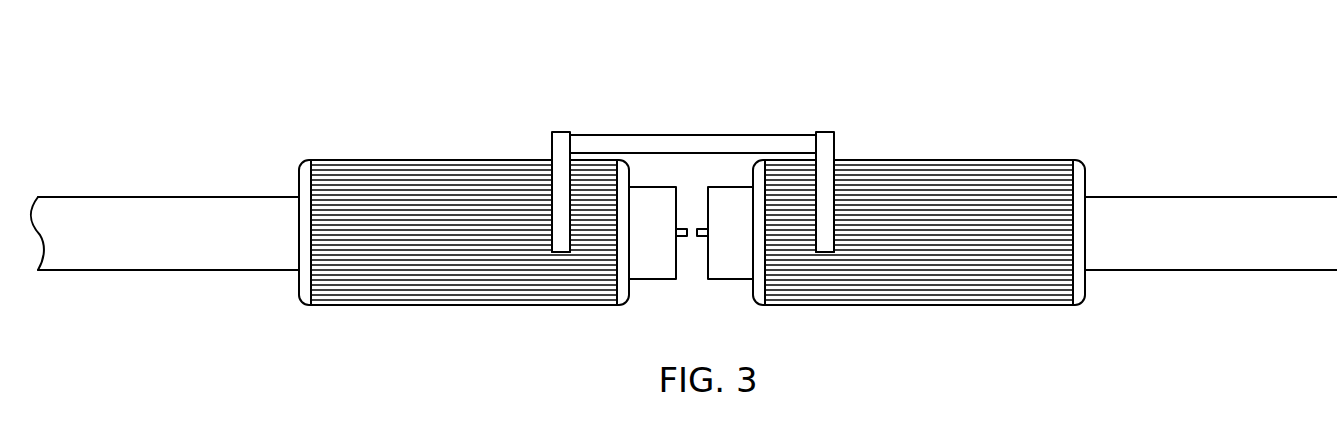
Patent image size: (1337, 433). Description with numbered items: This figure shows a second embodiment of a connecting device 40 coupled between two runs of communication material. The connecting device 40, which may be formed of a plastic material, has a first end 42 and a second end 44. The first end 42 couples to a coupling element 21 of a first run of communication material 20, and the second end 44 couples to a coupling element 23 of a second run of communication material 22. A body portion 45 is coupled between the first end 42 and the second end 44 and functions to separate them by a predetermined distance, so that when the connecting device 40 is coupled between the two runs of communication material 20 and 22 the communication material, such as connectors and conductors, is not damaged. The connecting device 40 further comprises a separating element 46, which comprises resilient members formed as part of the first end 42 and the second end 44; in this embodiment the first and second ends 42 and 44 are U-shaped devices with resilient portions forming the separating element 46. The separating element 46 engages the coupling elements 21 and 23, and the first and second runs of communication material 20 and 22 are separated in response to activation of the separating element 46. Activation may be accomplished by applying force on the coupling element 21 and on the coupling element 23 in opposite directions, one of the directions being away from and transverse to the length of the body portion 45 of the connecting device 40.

The first run of communication material 20 is at (124, 213).
The coupling element 21 is at (485, 192).
The second run of communication material 22 is at (1188, 218).
The coupling element 23 is at (958, 212).
The connecting device 40 is at (695, 190).
The first end 42 is at (558, 150).
The second end 44 is at (826, 146).
The body portion 45 is at (661, 143).
The separating element 46 is at (561, 244).